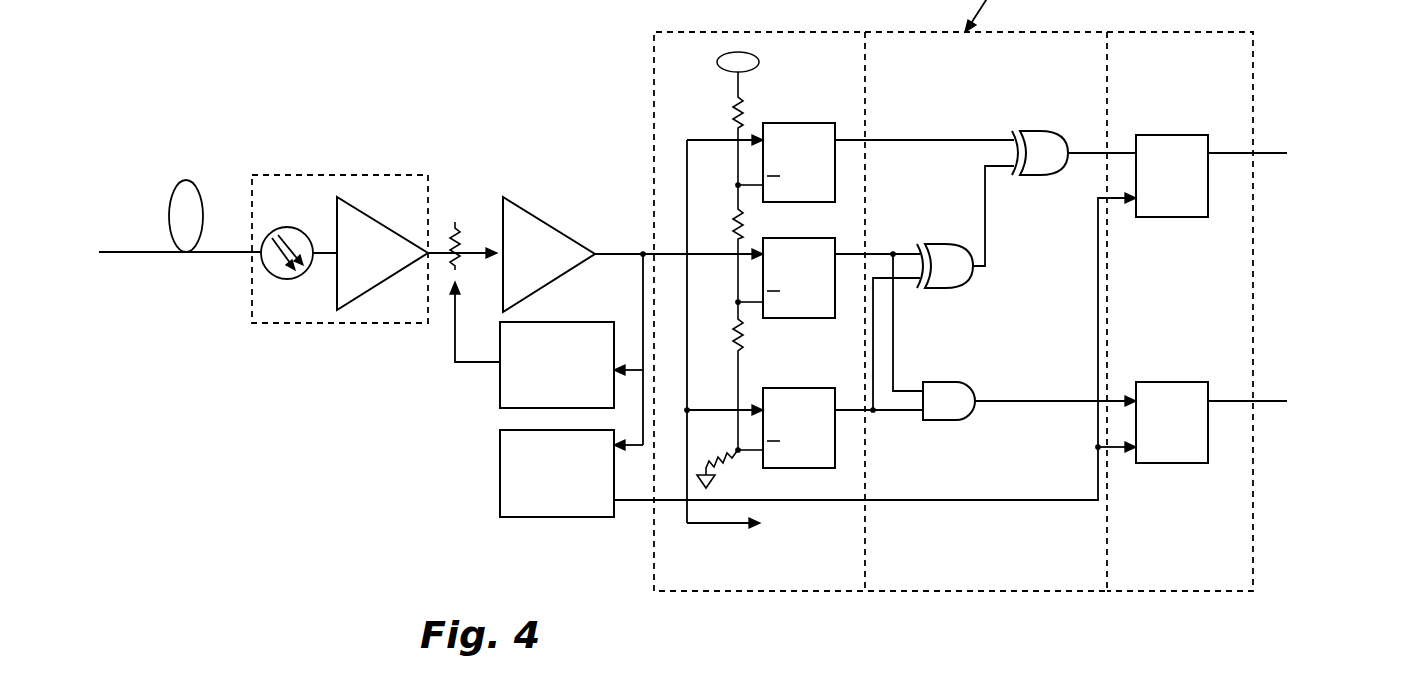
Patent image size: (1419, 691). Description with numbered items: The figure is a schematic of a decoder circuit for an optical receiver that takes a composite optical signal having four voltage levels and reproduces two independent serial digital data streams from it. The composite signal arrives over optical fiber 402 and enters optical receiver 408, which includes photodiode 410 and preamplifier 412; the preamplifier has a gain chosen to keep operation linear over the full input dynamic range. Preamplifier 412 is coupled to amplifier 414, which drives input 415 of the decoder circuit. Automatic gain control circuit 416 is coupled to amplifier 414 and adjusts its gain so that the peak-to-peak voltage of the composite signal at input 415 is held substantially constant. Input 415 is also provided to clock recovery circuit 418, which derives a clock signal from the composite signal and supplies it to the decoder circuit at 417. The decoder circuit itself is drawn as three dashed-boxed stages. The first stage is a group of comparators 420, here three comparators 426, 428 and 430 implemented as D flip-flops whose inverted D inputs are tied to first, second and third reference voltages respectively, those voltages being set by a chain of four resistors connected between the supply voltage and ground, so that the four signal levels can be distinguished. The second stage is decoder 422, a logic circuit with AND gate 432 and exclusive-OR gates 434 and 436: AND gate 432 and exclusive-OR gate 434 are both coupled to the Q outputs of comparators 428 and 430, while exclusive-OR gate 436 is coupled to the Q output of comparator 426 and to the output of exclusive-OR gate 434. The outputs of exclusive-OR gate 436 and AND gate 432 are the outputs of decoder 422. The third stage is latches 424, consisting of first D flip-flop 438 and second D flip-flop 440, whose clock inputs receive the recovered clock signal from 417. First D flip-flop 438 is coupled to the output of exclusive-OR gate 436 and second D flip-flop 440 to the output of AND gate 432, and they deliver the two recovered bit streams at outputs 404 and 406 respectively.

The optical fiber 402 is at (142, 256).
The output 404 is at (1273, 153).
The output 406 is at (1272, 401).
The optical receiver 408 is at (315, 324).
The photodiode 410 is at (300, 230).
The preamplifier 412 is at (388, 228).
The amplifier 414 is at (542, 221).
The input 415 is at (613, 253).
The automatic gain control circuit 416 is at (500, 388).
The clock signal input 417 is at (633, 502).
The clock recovery circuit 418 is at (522, 518).
The comparators 420 is at (840, 592).
The decoder 422 is at (1045, 592).
The latches 424 is at (1165, 592).
The comparator 426 is at (805, 123).
The comparator 428 is at (803, 318).
The comparator 430 is at (803, 388).
The AND gate 432 is at (967, 419).
The exclusive-OR gate 434 is at (942, 290).
The exclusive-OR gate 436 is at (1033, 132).
The first D flip-flop 438 is at (1185, 135).
The second D flip-flop 440 is at (1185, 382).